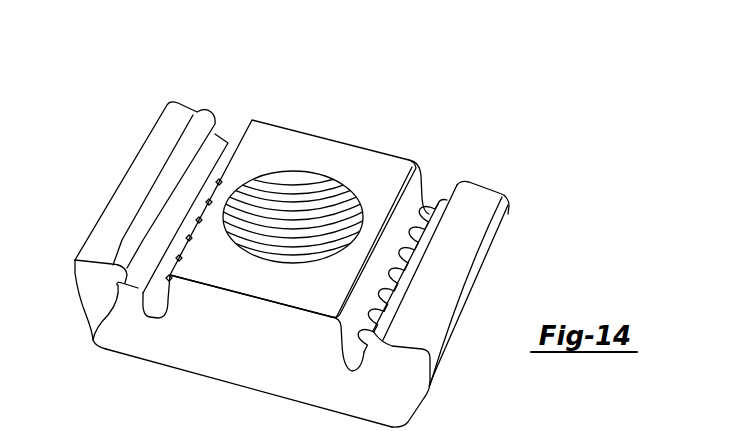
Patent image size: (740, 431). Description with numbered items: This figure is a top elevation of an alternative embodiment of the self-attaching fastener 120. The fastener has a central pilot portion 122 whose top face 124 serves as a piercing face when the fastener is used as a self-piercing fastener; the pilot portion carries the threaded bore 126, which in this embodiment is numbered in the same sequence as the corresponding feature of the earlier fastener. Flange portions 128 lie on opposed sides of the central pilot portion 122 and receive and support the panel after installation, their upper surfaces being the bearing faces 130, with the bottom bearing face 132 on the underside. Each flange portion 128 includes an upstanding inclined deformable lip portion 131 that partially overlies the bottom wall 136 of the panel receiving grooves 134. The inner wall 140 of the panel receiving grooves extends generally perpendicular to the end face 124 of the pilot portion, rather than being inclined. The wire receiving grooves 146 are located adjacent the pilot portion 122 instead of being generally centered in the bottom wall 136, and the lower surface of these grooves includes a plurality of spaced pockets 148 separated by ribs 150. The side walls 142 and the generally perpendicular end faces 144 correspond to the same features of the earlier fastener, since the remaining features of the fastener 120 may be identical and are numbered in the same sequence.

The self-attaching fastener 120 is at (345, 132).
The central pilot portion 122 is at (253, 122).
The top face 124 is at (389, 161).
The threaded bore 126 is at (306, 187).
The flange portions 128 is at (462, 237).
The left spring clip 130 is at (103, 223).
The upstanding inclined deformable lip portion 131 is at (472, 198).
The bottom edge of nut body 132 is at (263, 392).
The panel receiving grooves 134 is at (175, 208).
The bottom wall 136 is at (92, 333).
The inner wall 140 is at (352, 341).
The chamfered corner 142 is at (444, 406).
The front face 144 is at (245, 327).
The wire receiving grooves 146 is at (141, 319).
The spaced pockets 148 is at (380, 300).
The ribs 150 is at (390, 277).